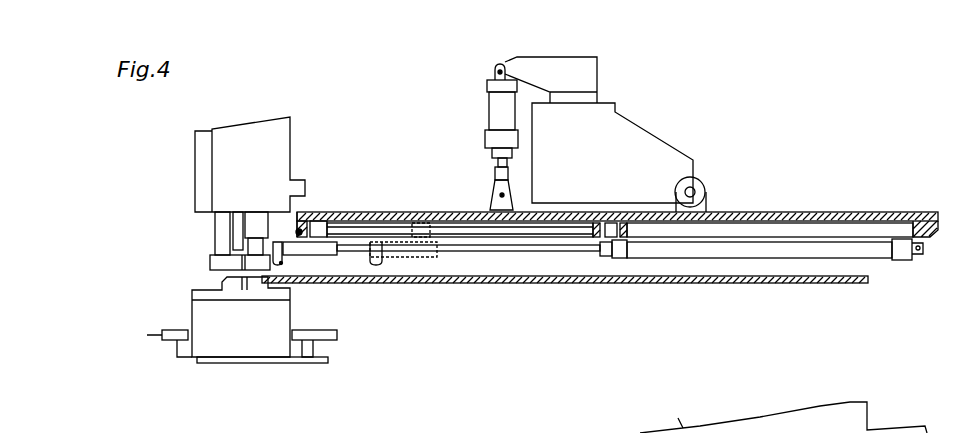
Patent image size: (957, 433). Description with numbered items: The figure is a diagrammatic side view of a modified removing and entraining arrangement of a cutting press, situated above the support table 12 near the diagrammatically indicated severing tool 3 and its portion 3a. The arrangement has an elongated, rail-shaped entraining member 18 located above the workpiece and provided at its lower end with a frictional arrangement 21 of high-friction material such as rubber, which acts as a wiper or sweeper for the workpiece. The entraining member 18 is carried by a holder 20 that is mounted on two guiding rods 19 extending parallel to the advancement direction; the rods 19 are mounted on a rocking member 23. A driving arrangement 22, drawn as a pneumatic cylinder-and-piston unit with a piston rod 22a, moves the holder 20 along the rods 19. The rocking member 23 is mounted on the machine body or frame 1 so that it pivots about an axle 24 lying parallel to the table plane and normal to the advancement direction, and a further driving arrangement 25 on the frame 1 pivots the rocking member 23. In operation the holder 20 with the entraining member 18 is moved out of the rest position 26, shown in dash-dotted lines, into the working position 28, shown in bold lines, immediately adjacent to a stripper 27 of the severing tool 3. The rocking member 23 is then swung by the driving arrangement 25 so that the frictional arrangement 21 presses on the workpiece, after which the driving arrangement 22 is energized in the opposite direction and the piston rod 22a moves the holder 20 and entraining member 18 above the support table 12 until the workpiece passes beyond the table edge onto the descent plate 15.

The machine body or frame 1 is at (205, 397).
The severing tool 3 is at (242, 224).
The holder insert 3a is at (220, 284).
The support table 12 is at (470, 283).
The descent plate 15 is at (828, 283).
The entraining member 18 is at (280, 263).
The guiding rods 19 is at (578, 228).
The holder 20 is at (323, 250).
The frictional arrangement 21 is at (282, 263).
The driving arrangement 22 is at (677, 250).
The piston rod 22a is at (520, 247).
The rocking member 23 is at (422, 213).
The axle 24 is at (703, 183).
The driving arrangement 25 is at (496, 115).
The rest position 26 is at (387, 243).
The stripper 27 is at (255, 270).
The working position 28 is at (253, 252).